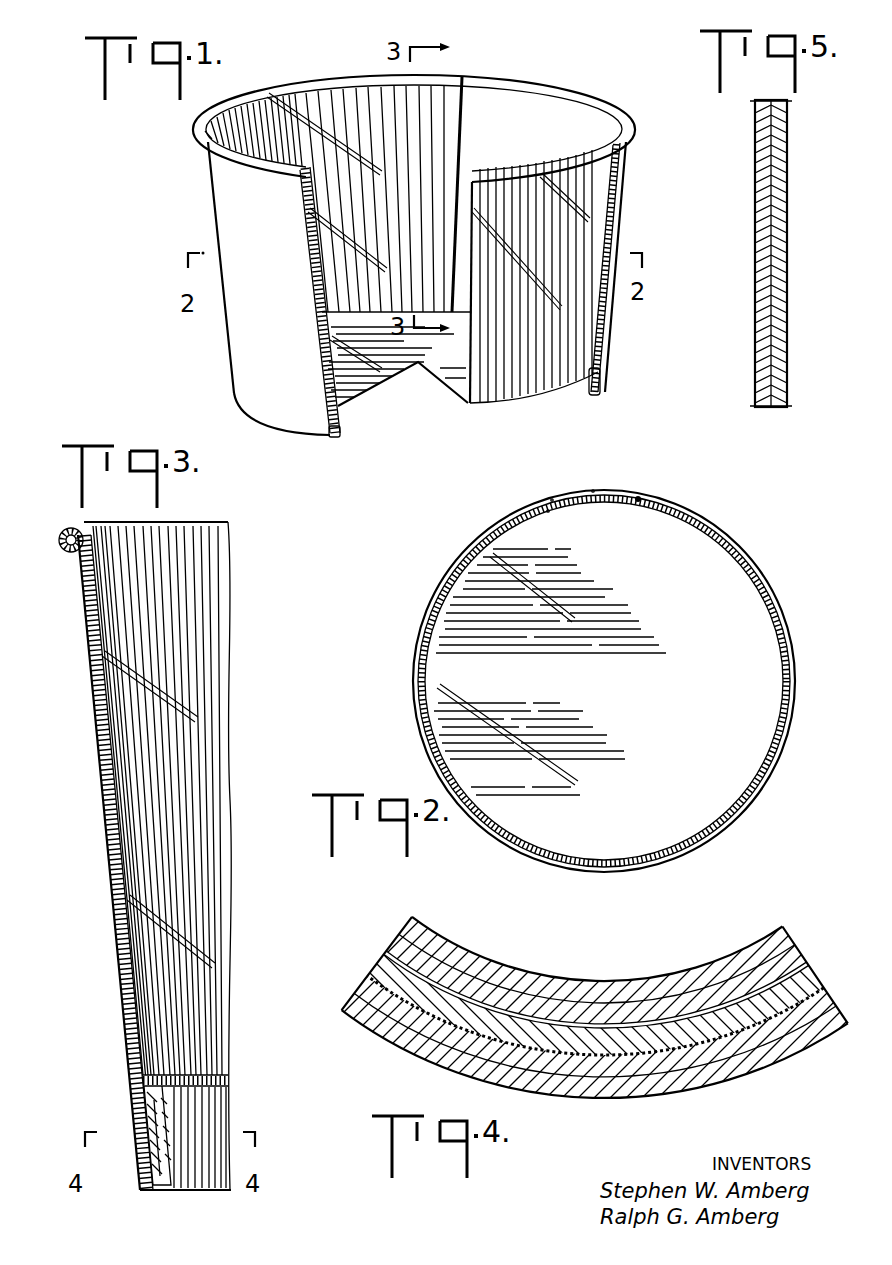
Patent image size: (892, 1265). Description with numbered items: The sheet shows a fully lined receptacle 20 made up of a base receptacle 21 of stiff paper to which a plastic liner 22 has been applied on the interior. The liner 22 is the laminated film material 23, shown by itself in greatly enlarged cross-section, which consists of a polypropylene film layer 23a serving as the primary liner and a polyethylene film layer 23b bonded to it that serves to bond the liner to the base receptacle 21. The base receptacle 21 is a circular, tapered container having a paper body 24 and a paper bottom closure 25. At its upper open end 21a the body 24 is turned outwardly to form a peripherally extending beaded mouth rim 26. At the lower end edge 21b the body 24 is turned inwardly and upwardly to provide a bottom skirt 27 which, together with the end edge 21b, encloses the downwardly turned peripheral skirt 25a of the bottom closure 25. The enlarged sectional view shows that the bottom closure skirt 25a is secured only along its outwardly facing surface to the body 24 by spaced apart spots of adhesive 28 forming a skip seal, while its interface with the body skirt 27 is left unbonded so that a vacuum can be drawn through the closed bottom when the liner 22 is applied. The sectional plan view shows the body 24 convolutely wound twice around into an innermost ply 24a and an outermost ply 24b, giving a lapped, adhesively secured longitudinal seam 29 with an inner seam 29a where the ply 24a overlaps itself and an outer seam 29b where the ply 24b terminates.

In FIG. 1, the receptacle 20 is at (203, 207).
In FIG. 3, the receptacle 20 is at (75, 716).
In FIG. 1, the base receptacle 21 is at (255, 340).
In FIG. 2, the base receptacle 21 is at (492, 528).
In FIG. 3, the base receptacle 21 is at (100, 868).
In FIG. 1, the upper open end 21a is at (381, 70).
In FIG. 3, the upper open end 21a is at (86, 517).
In FIG. 1, the lower end edge 21b is at (338, 438).
In FIG. 3, the lower end edge 21b is at (157, 1194).
In FIG. 1, the plastic liner 22 is at (490, 403).
In FIG. 2, the plastic liner 22 is at (440, 615).
In FIG. 3, the plastic liner 22 is at (120, 772).
In FIG. 5, the laminated film material 23 is at (750, 283).
In FIG. 5, the polypropylene film layer 23a is at (757, 208).
In FIG. 5, the polyethylene film layer 23b is at (818, 228).
In FIG. 1, the body 24 is at (256, 375).
In FIG. 2, the body 24 is at (452, 576).
In FIG. 3, the body 24 is at (117, 953).
In FIG. 4, the body 24 is at (407, 1043).
In FIG. 2, the innermost ply 24a is at (548, 512).
In FIG. 2, the outermost ply 24b is at (553, 500).
In FIG. 1, the bottom closure 25 is at (396, 372).
In FIG. 2, the bottom closure 25 is at (618, 663).
In FIG. 3, the bottom closure 25 is at (218, 1088).
In FIG. 3, the bottom closure skirt 25a is at (152, 1127).
In FIG. 4, the bottom closure skirt 25a is at (586, 1013).
In FIG. 1, the beaded mouth rim 26 is at (195, 136).
In FIG. 3, the beaded mouth rim 26 is at (62, 553).
In FIG. 1, the bottom skirt 27 is at (318, 287).
In FIG. 3, the bottom skirt 27 is at (175, 1170).
In FIG. 4, the bottom skirt 27 is at (520, 980).
In FIG. 4, the spots of adhesive 28 is at (457, 1022).
In FIG. 1, the longitudinal seam 29 is at (452, 152).
In FIG. 2, the inner seam 29a is at (637, 505).
In FIG. 2, the outer seam 29b is at (593, 490).